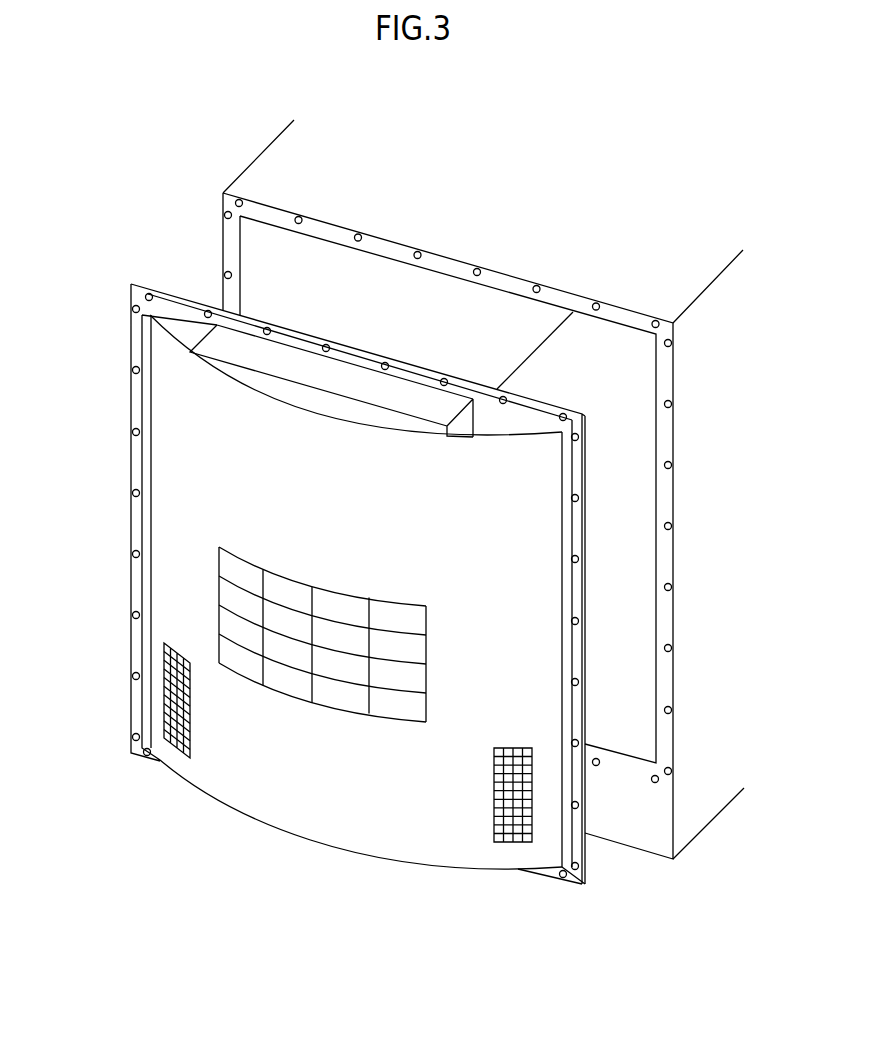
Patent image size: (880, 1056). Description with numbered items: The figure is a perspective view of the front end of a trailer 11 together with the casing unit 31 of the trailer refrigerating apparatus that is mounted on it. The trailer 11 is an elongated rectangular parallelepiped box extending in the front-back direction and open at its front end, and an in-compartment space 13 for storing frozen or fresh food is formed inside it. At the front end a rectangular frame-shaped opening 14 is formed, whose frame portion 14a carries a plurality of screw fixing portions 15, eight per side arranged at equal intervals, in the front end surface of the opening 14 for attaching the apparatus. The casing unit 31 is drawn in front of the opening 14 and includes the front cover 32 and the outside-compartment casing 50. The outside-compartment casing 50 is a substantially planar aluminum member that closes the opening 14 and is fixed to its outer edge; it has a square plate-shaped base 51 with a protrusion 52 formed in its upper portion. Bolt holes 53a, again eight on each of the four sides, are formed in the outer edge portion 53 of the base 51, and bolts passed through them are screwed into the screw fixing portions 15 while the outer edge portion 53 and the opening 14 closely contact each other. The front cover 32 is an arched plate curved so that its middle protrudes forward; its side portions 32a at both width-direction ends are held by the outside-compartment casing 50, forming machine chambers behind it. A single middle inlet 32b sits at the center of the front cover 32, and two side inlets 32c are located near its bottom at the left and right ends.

The trailer 11 is at (246, 165).
The in-compartment space 13 is at (455, 513).
The opening 14 is at (330, 233).
The frame flange 14a is at (233, 255).
The screw fixing portions 15 is at (475, 271).
The casing unit 31 is at (111, 337).
The front cover 32 is at (359, 592).
The side portions 32a is at (145, 475).
The middle inlet 32b is at (282, 578).
The side inlets 32c is at (186, 711).
The outside-compartment casing 50 is at (357, 559).
The base 51 is at (540, 427).
The protrusion 52 is at (352, 380).
The outer edge portion 53 is at (331, 358).
The bolt holes 53a is at (444, 383).